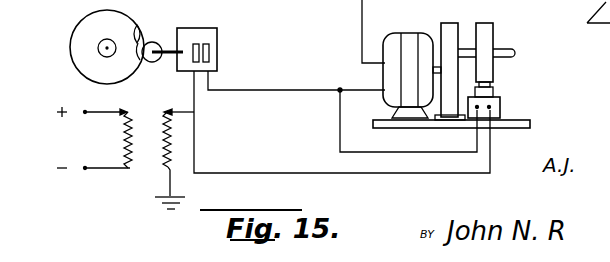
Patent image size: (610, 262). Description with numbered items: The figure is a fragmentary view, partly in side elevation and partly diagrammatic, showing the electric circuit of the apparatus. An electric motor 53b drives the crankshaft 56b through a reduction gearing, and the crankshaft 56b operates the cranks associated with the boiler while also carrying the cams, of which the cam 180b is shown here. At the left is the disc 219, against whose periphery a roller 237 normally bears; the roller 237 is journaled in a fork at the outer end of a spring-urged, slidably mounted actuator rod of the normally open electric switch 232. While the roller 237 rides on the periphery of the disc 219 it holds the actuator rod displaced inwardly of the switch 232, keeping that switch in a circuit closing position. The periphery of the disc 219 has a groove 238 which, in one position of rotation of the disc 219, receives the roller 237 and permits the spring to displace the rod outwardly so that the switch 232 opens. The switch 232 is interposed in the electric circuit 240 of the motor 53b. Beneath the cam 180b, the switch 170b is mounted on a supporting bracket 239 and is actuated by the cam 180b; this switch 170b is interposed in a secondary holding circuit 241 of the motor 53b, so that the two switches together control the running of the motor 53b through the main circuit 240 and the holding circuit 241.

The disc 219 is at (72, 62).
The groove 238 is at (137, 25).
The roller 237 is at (153, 62).
The electric switch 232 is at (217, 55).
The electric circuit 240 is at (238, 92).
The secondary holding circuit 241 is at (352, 173).
The supporting bracket 239 is at (433, 128).
The electric motor 53b is at (408, 40).
The cam 180b is at (489, 25).
The crankshaft 56b is at (515, 50).
The switch 170b is at (500, 107).